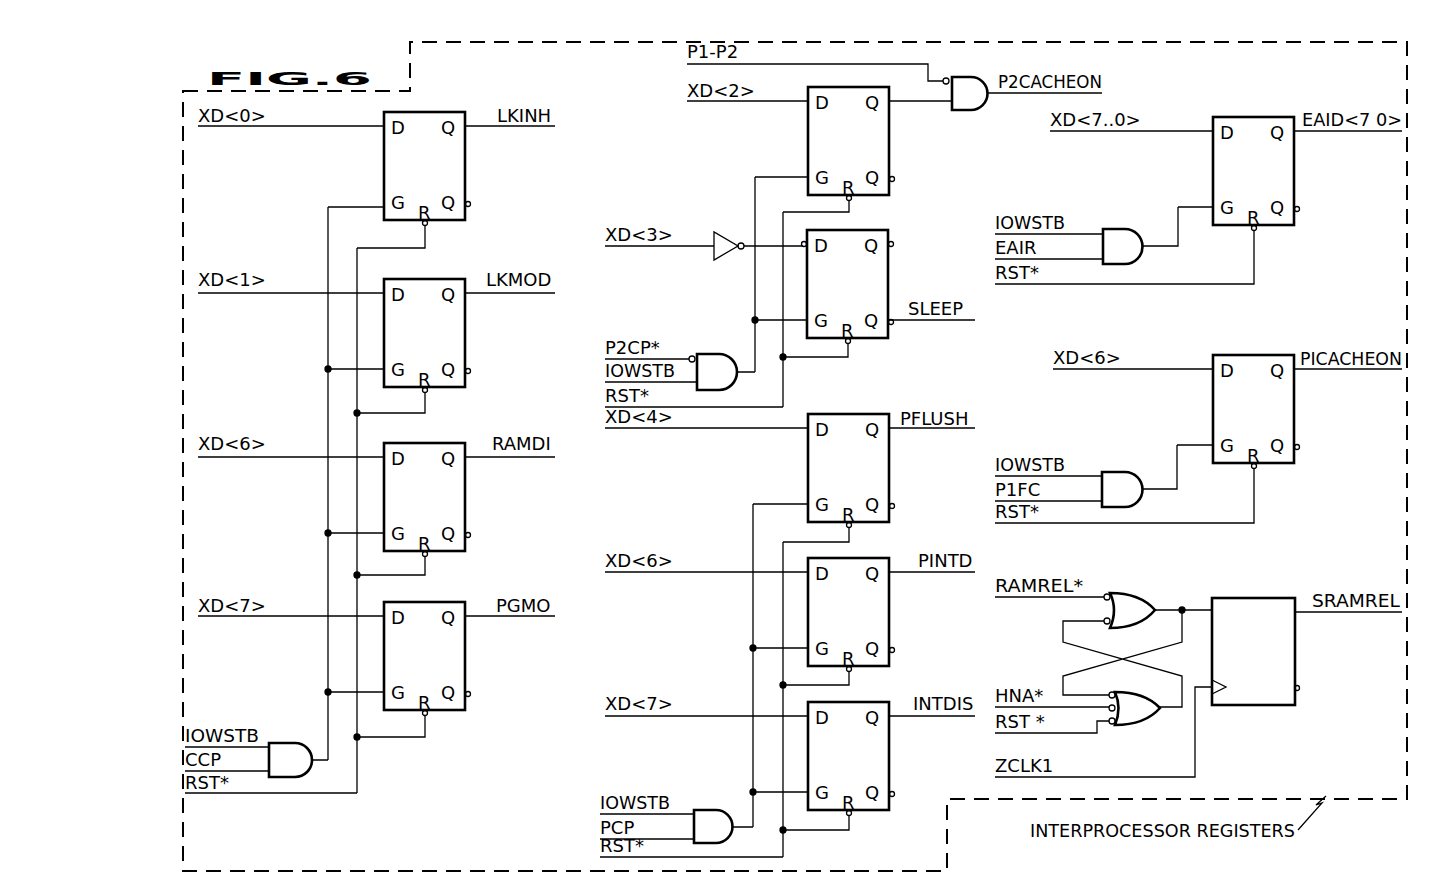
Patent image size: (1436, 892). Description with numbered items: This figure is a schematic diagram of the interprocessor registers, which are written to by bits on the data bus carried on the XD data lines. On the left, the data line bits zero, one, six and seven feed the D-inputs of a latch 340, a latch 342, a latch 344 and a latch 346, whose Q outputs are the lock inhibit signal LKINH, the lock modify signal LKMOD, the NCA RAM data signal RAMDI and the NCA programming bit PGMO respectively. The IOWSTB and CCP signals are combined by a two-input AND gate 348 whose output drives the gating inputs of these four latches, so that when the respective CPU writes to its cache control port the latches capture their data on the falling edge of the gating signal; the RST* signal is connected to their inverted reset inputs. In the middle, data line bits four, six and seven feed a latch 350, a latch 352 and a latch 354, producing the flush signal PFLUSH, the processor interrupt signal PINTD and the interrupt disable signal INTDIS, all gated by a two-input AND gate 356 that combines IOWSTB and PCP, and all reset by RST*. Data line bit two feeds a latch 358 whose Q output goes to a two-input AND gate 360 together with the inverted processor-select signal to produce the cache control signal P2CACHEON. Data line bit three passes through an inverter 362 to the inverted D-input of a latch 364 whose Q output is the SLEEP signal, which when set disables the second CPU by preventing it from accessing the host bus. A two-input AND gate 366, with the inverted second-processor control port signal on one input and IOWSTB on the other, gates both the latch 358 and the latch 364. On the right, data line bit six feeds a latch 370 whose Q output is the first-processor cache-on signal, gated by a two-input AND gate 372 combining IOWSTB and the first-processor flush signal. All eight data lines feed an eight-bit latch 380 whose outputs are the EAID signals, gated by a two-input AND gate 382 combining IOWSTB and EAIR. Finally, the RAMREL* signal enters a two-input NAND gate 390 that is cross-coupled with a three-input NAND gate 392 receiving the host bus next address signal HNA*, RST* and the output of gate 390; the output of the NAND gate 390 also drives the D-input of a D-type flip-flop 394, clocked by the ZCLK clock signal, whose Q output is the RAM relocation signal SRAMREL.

The latch 340 is at (428, 108).
The latch 342 is at (449, 275).
The latch 344 is at (462, 438).
The latch 346 is at (464, 598).
The two-input AND gate 348 is at (296, 742).
The latch 350 is at (890, 470).
The latch 352 is at (890, 615).
The latch 354 is at (890, 757).
The two-input AND gate 356 is at (712, 810).
The latch 358 is at (890, 152).
The two-input AND gate 360 is at (972, 110).
The inverter 362 is at (728, 232).
The latch 364 is at (890, 275).
The two-input AND gate 366 is at (720, 352).
The latch 370 is at (1297, 430).
The two-input AND gate 372 is at (1114, 472).
The eight-bit latch 380 is at (1298, 184).
The two-input AND gate 382 is at (1116, 228).
The two-input NAND gate 390 is at (1120, 596).
The three-input NAND gate 392 is at (1127, 726).
The D-type flip-flop 394 is at (1298, 670).